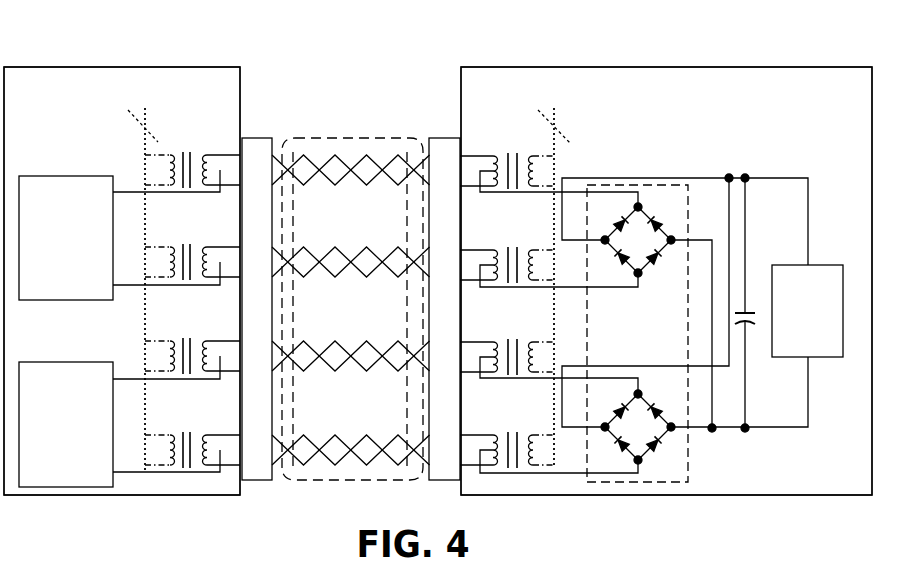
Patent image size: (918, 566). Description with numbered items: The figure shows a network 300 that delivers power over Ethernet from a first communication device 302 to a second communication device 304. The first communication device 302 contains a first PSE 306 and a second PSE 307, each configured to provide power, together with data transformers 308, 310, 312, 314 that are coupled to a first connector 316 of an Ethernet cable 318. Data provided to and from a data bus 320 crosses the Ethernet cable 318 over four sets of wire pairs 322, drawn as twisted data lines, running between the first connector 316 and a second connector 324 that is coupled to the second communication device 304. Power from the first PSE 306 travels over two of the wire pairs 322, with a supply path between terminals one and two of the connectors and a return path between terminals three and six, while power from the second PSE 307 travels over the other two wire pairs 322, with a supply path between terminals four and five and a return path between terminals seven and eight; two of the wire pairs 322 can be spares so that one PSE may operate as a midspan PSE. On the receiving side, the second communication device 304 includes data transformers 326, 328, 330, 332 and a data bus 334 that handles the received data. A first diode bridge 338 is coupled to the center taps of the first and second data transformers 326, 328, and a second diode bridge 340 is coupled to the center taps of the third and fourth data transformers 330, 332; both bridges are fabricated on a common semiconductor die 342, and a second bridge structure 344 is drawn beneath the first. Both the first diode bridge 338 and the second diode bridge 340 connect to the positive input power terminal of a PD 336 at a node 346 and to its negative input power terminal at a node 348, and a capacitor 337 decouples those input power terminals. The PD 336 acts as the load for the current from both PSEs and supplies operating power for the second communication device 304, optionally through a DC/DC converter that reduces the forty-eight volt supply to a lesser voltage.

The network 300 is at (84, 38).
The first communication device 302 is at (122, 281).
The second communication device 304 is at (666, 281).
The first PSE 306 is at (60, 176).
The second PSE 307 is at (60, 362).
The data transformer 308 is at (232, 153).
The data transformer 310 is at (232, 245).
The data transformer 312 is at (232, 339).
The data transformer 314 is at (232, 433).
The first connector 316 is at (255, 138).
The Ethernet cable 318 is at (345, 138).
The data bus 320 is at (145, 146).
The wire pairs 322 is at (390, 176).
The second connector 324 is at (452, 138).
The first data transformer 326 is at (468, 156).
The second data transformer 328 is at (468, 250).
The third data transformer 330 is at (468, 342).
The fourth data transformer 332 is at (468, 435).
The data bus 334 is at (560, 135).
The PD 336 is at (812, 265).
The capacitor 337 is at (762, 270).
The first diode bridge 338 is at (668, 285).
The second diode bridge 340 is at (676, 378).
The common semiconductor die 342 is at (650, 186).
The bridge rectifier 344 is at (690, 460).
The node 346 is at (763, 160).
The node 348 is at (763, 450).